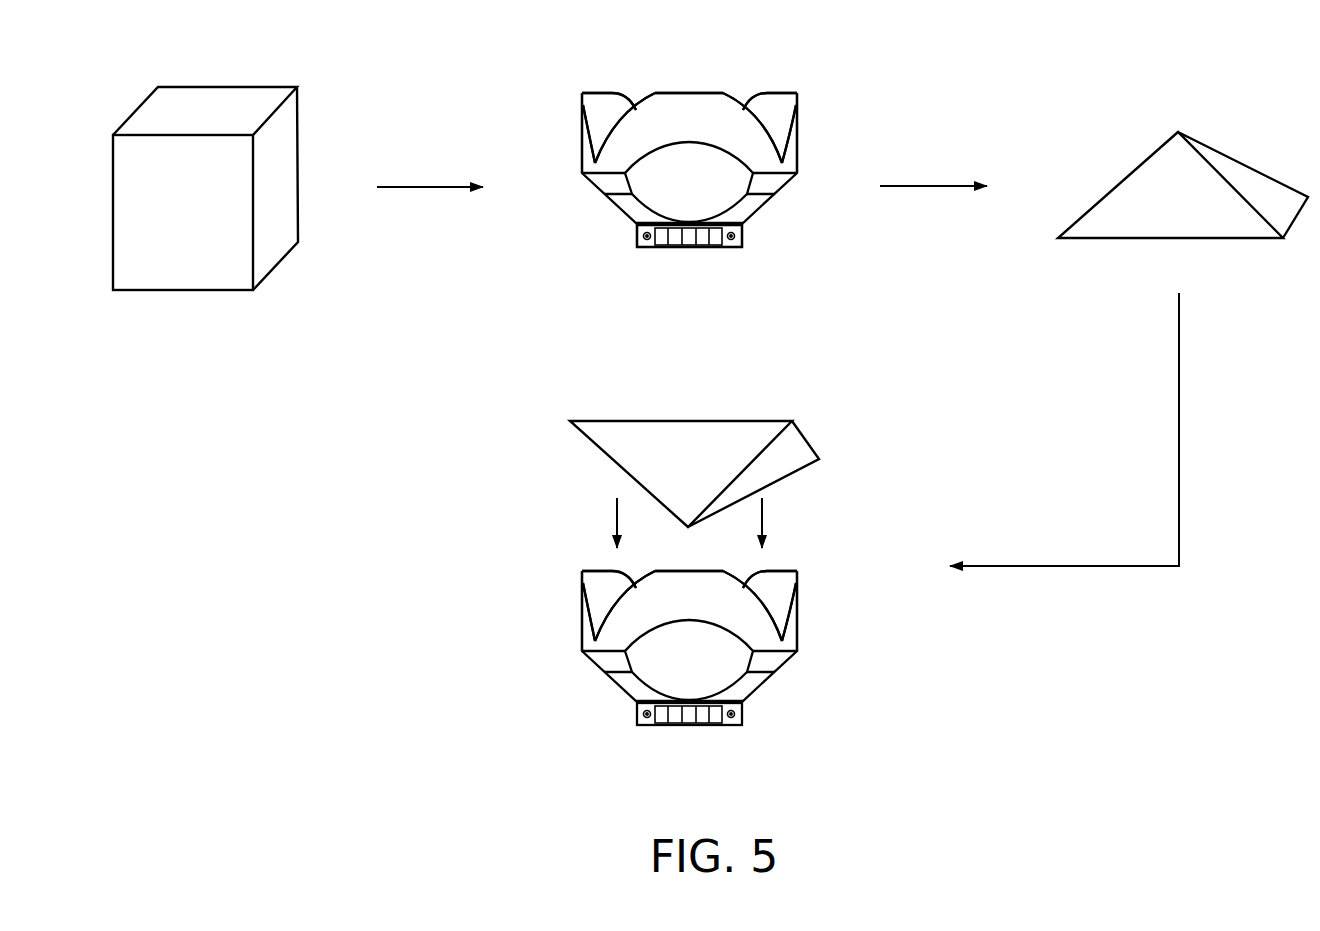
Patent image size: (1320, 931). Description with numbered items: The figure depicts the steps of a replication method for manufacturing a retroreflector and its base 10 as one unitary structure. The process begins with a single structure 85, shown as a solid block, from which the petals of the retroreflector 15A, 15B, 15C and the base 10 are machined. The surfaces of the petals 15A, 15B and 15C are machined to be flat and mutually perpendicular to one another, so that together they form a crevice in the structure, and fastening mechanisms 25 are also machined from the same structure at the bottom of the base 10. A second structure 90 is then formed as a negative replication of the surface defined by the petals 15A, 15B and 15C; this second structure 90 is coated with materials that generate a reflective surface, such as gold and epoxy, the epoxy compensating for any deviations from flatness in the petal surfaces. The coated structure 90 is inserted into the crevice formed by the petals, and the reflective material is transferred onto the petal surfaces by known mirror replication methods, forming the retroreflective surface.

The single structure 85 is at (197, 230).
The base 10 is at (616, 238).
The petal 15A is at (593, 93).
The petal 15B is at (688, 93).
The petal 15C is at (780, 93).
The fastening mechanisms 25 is at (698, 248).
The second structure 90 is at (1185, 210).